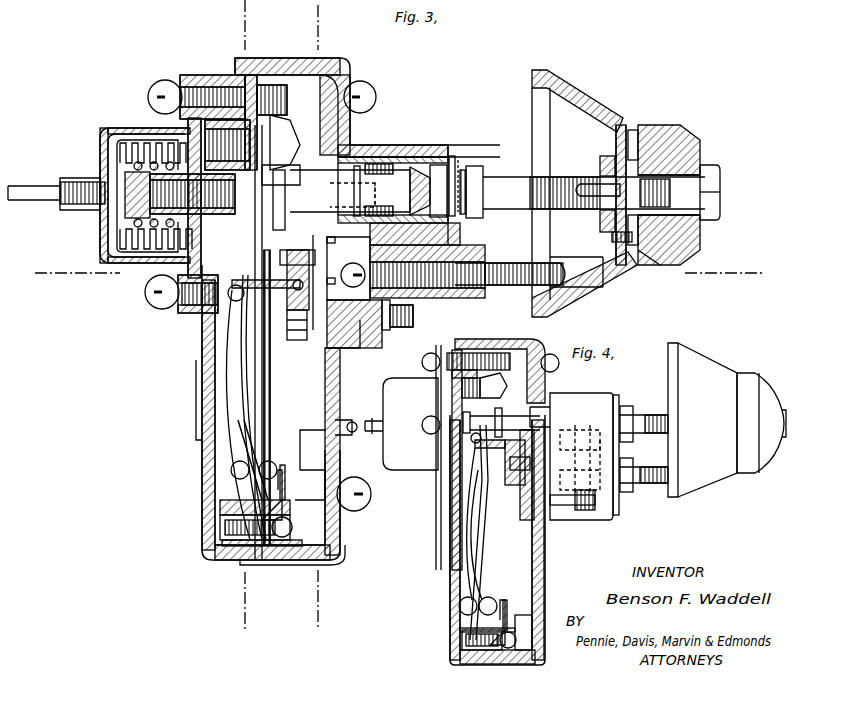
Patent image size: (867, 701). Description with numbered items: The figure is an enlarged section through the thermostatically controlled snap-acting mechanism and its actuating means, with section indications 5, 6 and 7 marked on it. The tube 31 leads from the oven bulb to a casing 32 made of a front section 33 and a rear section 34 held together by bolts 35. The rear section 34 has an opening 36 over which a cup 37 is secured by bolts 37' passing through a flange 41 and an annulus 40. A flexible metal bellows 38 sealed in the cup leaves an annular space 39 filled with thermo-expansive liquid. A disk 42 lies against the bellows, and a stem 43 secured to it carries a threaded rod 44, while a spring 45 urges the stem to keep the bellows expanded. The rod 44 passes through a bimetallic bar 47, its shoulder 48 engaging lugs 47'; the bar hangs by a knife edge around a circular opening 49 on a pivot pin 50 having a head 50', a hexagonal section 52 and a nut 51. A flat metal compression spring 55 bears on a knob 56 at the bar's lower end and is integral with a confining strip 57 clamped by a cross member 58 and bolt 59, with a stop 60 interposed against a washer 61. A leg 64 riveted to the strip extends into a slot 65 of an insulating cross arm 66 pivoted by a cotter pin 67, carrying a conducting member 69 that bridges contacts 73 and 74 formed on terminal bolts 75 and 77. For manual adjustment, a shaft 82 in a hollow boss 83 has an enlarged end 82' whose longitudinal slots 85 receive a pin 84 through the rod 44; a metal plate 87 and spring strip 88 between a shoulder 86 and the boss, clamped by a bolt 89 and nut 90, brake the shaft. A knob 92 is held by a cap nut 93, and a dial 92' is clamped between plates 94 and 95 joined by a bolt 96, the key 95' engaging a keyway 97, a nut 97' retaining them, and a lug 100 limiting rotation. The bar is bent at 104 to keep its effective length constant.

In FIG. 3, the section line 5- 5 is at (318, 38).
In FIG. 3, the section line 6- 6 is at (243, 38).
In FIG. 3, the section line 7- 7 is at (70, 277).
In FIG. 3, the tube 31 is at (25, 200).
In FIG. 3, the casing 32 is at (275, 56).
In FIG. 3, the front section 33 is at (360, 494).
In FIG. 3, the rear section 34 is at (205, 350).
In FIG. 3, the bolts 35 is at (362, 92).
In FIG. 3, the opening 36 is at (235, 212).
In FIG. 3, the cup 37 is at (144, 176).
In FIG. 4, the cup 37 is at (397, 424).
In FIG. 3, the bolts 37' is at (151, 85).
In FIG. 4, the bolts 37' is at (529, 386).
In FIG. 3, the flexible metal bellows 38 is at (140, 268).
In FIG. 3, the annular space 39 is at (118, 143).
In FIG. 3, the annulus 40 is at (190, 76).
In FIG. 3, the flange 41 is at (182, 310).
In FIG. 3, the disk 42 is at (102, 212).
In FIG. 3, the stem 43 is at (125, 183).
In FIG. 3, the rod 44 is at (255, 220).
In FIG. 4, the rod 44 is at (457, 430).
In FIG. 3, the spring 45 is at (118, 240).
In FIG. 3, the bimetallic bar 47 is at (281, 397).
In FIG. 4, the bimetallic bar 47 is at (492, 532).
In FIG. 3, the lugs 47' is at (290, 154).
In FIG. 3, the shoulder 48 is at (278, 175).
In FIG. 4, the shoulder 48 is at (498, 385).
In FIG. 3, the circular opening 49 is at (292, 150).
In FIG. 3, the pivot pin 50 is at (227, 109).
In FIG. 3, the head 50' is at (283, 77).
In FIG. 3, the nut 51 is at (185, 125).
In FIG. 3, the hexagonal section 52 is at (256, 90).
In FIG. 3, the flat metal compression spring 55 is at (200, 432).
In FIG. 4, the flat metal compression spring 55 is at (452, 549).
In FIG. 3, the knob 56 is at (228, 472).
In FIG. 4, the knob 56 is at (462, 606).
In FIG. 3, the strip of spring metal 57 is at (235, 365).
In FIG. 4, the strip of spring metal 57 is at (478, 523).
In FIG. 3, the cross member 58 is at (225, 500).
In FIG. 3, the bolt 59 is at (225, 543).
In FIG. 4, the bolt 59 is at (462, 648).
In FIG. 3, the stop 60 is at (285, 485).
In FIG. 4, the stop 60 is at (505, 615).
In FIG. 3, the washer 61 is at (270, 558).
In FIG. 3, the leg 64 is at (245, 290).
In FIG. 4, the leg 64 is at (496, 498).
In FIG. 3, the slot 65 is at (358, 270).
In FIG. 3, the cross arm 66 is at (302, 340).
In FIG. 4, the cross arm 66 is at (535, 515).
In FIG. 3, the cotter pin 67 is at (287, 325).
In FIG. 3, the conducting member 69 is at (340, 350).
In FIG. 3, the contact 73 is at (330, 238).
In FIG. 3, the contact 74 is at (325, 280).
In FIG. 4, the terminal bolt 75 is at (600, 440).
In FIG. 3, the terminal bolt 77 is at (420, 308).
In FIG. 4, the terminal bolt 77 is at (600, 485).
In FIG. 3, the shaft 82 is at (594, 176).
In FIG. 4, the shaft 82 is at (643, 408).
In FIG. 3, the enlarged end 82' is at (428, 149).
In FIG. 3, the hollow boss 83 is at (428, 150).
In FIG. 4, the hollow boss 83 is at (574, 400).
In FIG. 3, the pin 84 is at (360, 165).
In FIG. 3, the longitudinal slots 85 is at (392, 162).
In FIG. 3, the shoulder 86 is at (480, 168).
In FIG. 3, the metal plate 87 is at (454, 158).
In FIG. 3, the strip of spring metal 88 is at (466, 170).
In FIG. 4, the strip of spring metal 88 is at (652, 466).
In FIG. 3, the bolt 89 is at (518, 262).
In FIG. 4, the bolt 89 is at (655, 490).
In FIG. 3, the nut 90 is at (470, 295).
In FIG. 3, the knob 92 is at (677, 182).
In FIG. 4, the knob 92 is at (727, 427).
In FIG. 3, the dial 92' is at (577, 93).
In FIG. 3, the cap nut 93 is at (720, 180).
In FIG. 3, the plate 94 is at (640, 125).
In FIG. 3, the plate 95 is at (631, 176).
In FIG. 3, the key 95' is at (684, 249).
In FIG. 3, the bolt 96 is at (625, 272).
In FIG. 3, the keyway 97 is at (588, 171).
In FIG. 3, the nut 97' is at (598, 179).
In FIG. 3, the lug 100 is at (588, 262).
In FIG. 3, the bend 104 is at (240, 450).